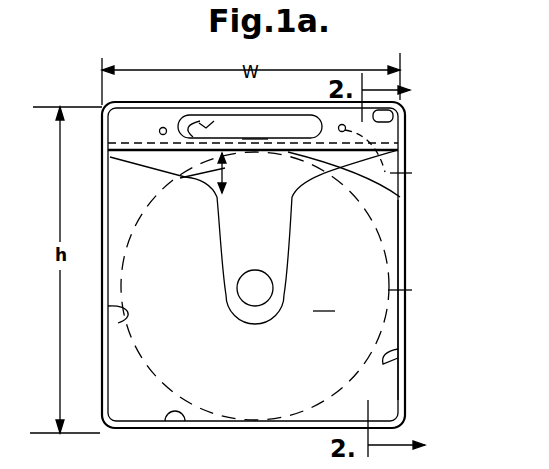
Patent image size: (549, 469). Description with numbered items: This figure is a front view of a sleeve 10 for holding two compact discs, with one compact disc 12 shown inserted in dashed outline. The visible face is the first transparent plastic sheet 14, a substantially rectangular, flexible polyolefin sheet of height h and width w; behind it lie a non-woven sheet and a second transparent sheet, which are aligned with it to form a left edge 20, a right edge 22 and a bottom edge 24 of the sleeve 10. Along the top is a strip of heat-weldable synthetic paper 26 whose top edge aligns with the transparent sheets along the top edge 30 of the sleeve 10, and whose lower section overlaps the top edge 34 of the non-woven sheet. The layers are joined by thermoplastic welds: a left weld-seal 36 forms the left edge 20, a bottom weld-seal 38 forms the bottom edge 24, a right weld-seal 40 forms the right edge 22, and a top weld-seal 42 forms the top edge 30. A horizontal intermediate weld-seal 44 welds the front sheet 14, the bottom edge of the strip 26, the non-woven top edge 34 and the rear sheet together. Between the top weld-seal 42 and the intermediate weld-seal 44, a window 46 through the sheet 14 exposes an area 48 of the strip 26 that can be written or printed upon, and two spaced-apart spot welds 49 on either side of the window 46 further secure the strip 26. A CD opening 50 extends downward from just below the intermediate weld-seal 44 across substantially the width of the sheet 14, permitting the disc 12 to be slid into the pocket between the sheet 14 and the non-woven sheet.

The sleeve 10 is at (246, 285).
The compact disc 12 is at (413, 291).
The first transparent plastic sheet 14 is at (255, 286).
The left edge 20 is at (102, 208).
The right edge 22 is at (407, 263).
The bottom edge 24 is at (143, 430).
The synthetic paper strip 26 is at (178, 116).
The top edge 30 is at (178, 114).
The top edge of non-woven sheet 34 is at (420, 174).
The left weld-seal 36 is at (130, 320).
The bottom weld-seal 38 is at (181, 430).
The right weld-seal 40 is at (400, 358).
The top weld-seal 42 is at (396, 118).
The intermediate weld-seal 44 is at (400, 196).
The window 46 is at (213, 122).
The exposed area 48 is at (255, 130).
The spot welds 49 is at (160, 128).
The CD opening 50 is at (176, 180).